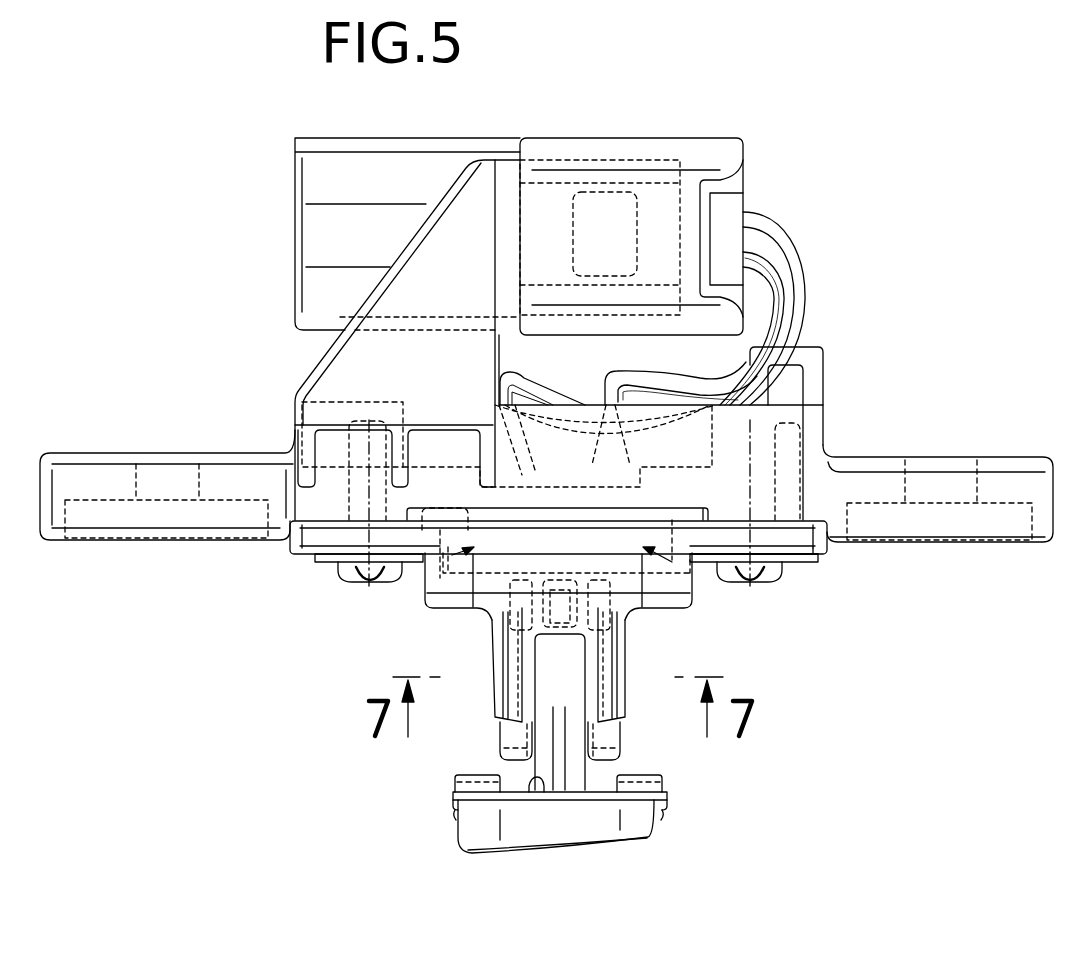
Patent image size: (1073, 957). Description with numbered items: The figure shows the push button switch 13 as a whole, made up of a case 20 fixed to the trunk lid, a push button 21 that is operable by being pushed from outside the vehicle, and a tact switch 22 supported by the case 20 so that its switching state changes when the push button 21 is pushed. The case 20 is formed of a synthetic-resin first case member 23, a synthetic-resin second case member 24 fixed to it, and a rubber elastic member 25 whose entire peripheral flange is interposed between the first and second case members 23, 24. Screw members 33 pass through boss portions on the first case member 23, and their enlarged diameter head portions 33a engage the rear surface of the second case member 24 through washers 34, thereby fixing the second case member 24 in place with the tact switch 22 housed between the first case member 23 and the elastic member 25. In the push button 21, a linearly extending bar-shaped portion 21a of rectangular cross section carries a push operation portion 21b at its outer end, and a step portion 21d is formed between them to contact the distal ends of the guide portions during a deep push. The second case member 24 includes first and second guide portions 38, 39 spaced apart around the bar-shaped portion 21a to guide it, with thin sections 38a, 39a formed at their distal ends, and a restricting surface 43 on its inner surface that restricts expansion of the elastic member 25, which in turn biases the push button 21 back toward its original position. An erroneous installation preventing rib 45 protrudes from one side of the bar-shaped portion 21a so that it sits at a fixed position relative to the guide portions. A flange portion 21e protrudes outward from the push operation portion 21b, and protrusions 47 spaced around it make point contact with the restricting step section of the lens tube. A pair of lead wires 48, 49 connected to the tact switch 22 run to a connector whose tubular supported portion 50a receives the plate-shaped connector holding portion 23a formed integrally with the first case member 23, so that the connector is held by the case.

The push button switch 13 is at (790, 572).
The case 20 is at (826, 428).
The push button 21 is at (658, 849).
The bar-shaped portion 21a is at (568, 690).
The push operation portion 21b is at (470, 840).
The step portion 21d is at (540, 794).
The flange portion 21e is at (455, 805).
The tact switch 22 is at (625, 490).
The first case member 23 is at (785, 415).
The connector holding portion 23a is at (646, 160).
The second case member 24 is at (318, 540).
The elastic member 25 is at (655, 612).
The screw member 33 is at (344, 463).
The enlarged diameter head portion 33a is at (385, 583).
The washer 34 is at (318, 563).
The first guide portion 38 is at (490, 688).
The thin section 38a is at (502, 740).
The second guide portion 39 is at (625, 690).
The thin section 39a is at (613, 742).
The restricting surface 43 is at (616, 575).
The erroneous installation preventing rib 45 is at (567, 767).
The protrusion 47 is at (455, 813).
The lead wire 48 is at (764, 263).
The lead wire 49 is at (796, 262).
The supported portion 50a is at (735, 180).